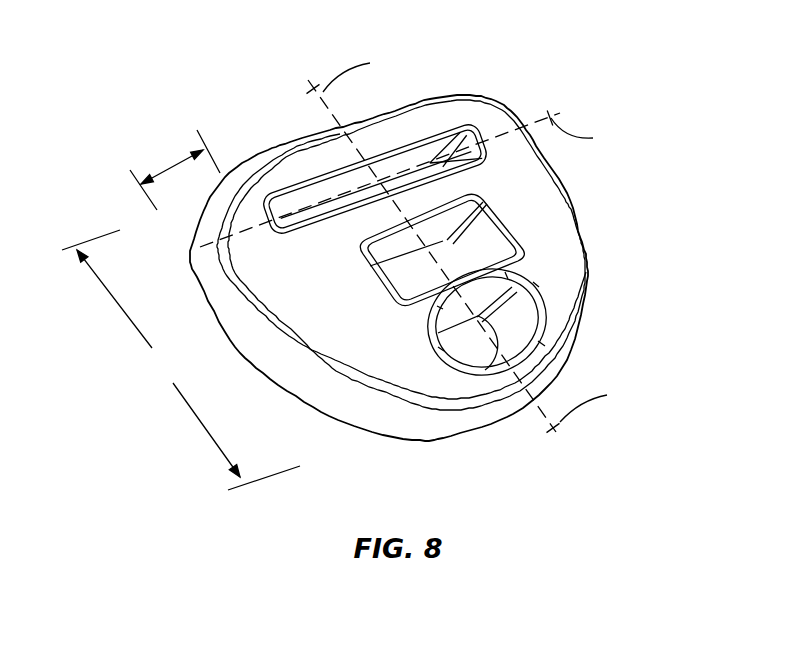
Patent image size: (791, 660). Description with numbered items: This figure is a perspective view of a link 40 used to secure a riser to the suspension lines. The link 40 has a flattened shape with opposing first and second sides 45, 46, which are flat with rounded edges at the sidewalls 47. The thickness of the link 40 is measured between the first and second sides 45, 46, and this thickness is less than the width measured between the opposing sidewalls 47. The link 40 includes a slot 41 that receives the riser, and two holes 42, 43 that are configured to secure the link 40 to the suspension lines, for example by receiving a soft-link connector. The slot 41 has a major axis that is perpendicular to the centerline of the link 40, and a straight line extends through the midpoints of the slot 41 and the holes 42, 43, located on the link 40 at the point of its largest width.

The link 40 is at (365, 265).
The slot 41 is at (437, 150).
The hole 42 is at (447, 242).
The hole 43 is at (478, 340).
The first side 45 is at (327, 322).
The second side 46 is at (383, 437).
The sidewall 47 is at (233, 298).